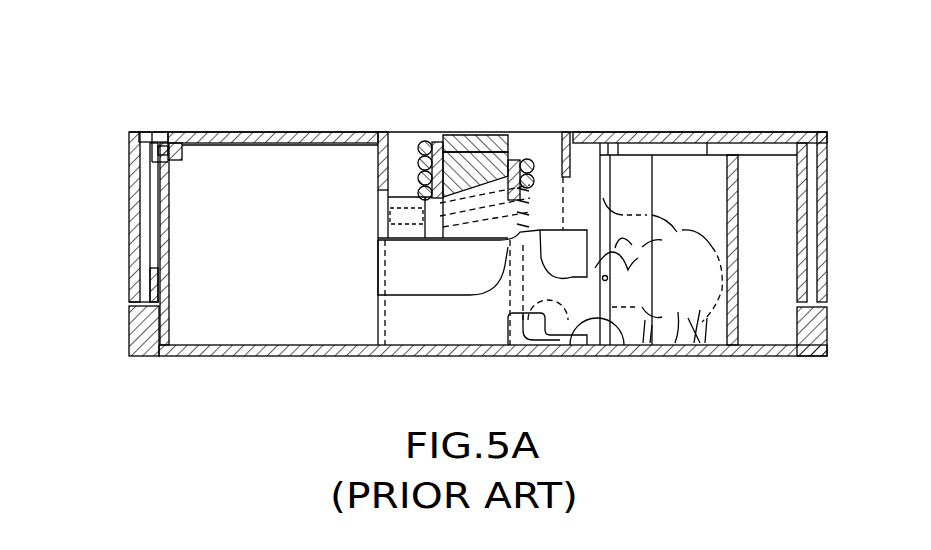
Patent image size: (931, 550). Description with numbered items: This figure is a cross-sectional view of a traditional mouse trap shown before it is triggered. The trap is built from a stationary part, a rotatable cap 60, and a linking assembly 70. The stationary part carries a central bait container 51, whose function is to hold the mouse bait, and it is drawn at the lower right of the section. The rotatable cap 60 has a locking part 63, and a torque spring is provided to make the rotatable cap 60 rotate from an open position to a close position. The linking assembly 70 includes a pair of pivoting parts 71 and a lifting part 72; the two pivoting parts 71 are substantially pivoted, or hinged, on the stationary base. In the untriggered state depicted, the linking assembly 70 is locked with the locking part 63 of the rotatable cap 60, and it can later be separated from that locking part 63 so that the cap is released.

The rotatable cap 60 is at (232, 128).
The locking part 63 is at (163, 137).
The pivoting parts 71 is at (150, 265).
The linking assembly 70 is at (433, 295).
The lifting part 72 is at (541, 230).
The central bait container 51 is at (613, 335).